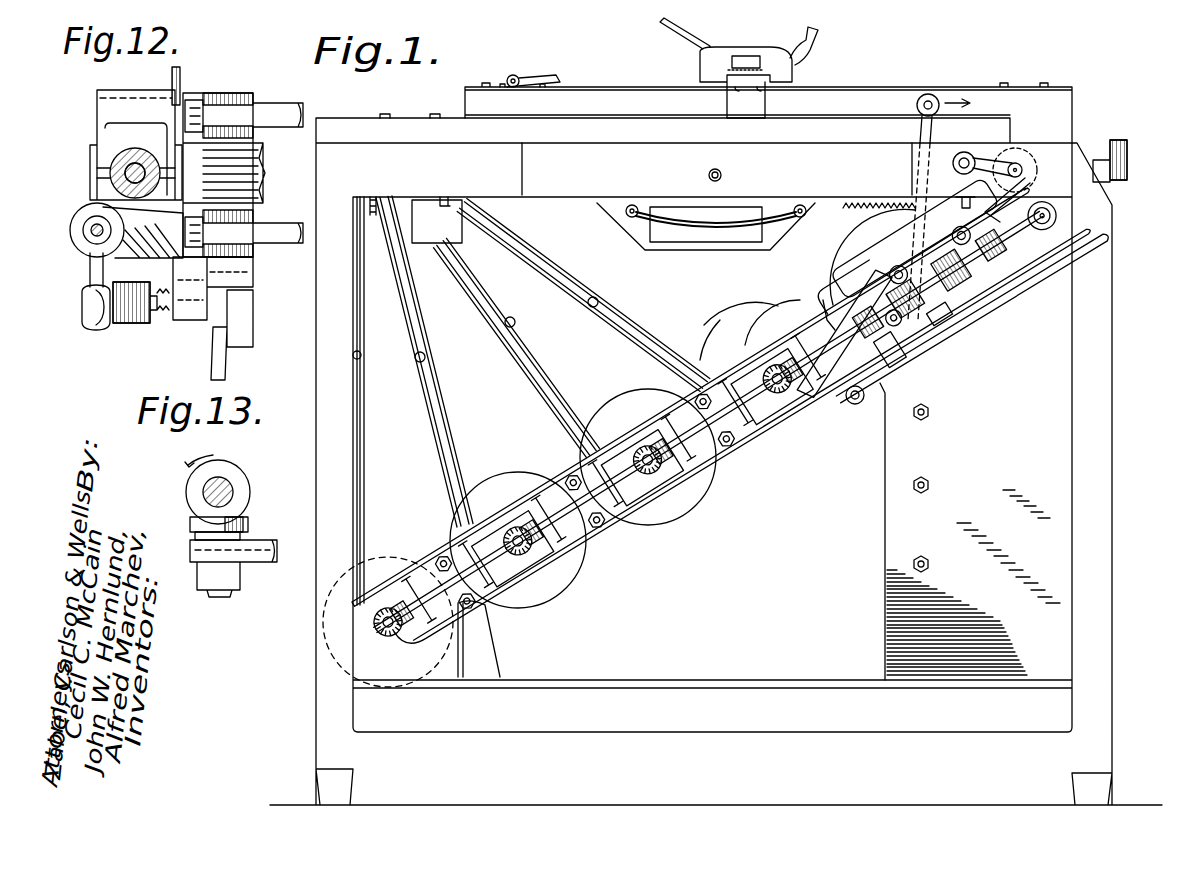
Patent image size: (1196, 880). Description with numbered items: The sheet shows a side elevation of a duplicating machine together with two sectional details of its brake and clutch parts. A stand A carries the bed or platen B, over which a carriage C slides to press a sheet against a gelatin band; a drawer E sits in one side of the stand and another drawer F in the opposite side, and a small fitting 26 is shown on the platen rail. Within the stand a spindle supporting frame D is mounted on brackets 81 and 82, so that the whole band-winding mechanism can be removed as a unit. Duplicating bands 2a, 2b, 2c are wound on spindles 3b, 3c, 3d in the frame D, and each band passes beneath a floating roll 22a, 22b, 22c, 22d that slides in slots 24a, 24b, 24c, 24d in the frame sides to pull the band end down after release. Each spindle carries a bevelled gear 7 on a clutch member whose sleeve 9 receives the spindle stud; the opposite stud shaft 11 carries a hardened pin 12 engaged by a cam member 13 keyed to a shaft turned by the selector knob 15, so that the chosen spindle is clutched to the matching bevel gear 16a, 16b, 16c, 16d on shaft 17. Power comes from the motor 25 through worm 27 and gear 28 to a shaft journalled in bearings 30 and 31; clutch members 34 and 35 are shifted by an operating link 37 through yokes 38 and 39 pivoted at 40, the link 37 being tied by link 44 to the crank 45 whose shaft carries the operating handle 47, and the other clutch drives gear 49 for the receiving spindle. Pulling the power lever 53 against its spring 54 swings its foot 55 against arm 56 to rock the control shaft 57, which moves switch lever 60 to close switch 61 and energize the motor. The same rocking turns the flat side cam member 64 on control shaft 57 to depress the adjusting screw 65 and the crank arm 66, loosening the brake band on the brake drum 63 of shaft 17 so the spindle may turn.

In FIG. 1, the stand A is at (1100, 440).
In FIG. 1, the bed or platen B is at (598, 85).
In FIG. 1, the carriage C is at (705, 58).
In FIG. 1, the spindle supporting frame D is at (742, 440).
In FIG. 12, the spindle supporting frame D is at (238, 100).
In FIG. 1, the drawer E is at (535, 163).
In FIG. 1, the drawer F is at (733, 236).
In FIG. 1, the gelatin or duplicating band 2a is at (690, 378).
In FIG. 1, the gelatin or duplicating band 2b is at (553, 425).
In FIG. 1, the gelatin or duplicating band 2c is at (440, 447).
In FIG. 1, the spindle 3b is at (614, 405).
In FIG. 1, the spindle 3c is at (500, 483).
In FIG. 1, the spindle 3d is at (385, 560).
In FIG. 1, the bevelled gear 7 is at (519, 528).
In FIG. 1, the sleeve 9 is at (772, 309).
In FIG. 1, the stud shaft 11 is at (918, 362).
In FIG. 1, the hardened pin 12 is at (814, 294).
In FIG. 1, the cam member 13 is at (832, 406).
In FIG. 1, the selector knob 15 is at (1128, 170).
In FIG. 1, the bevel gear 16a is at (734, 360).
In FIG. 1, the bevel gear 16b is at (660, 490).
In FIG. 1, the bevel gear 16c is at (545, 565).
In FIG. 1, the bevel gear 16d is at (396, 640).
In FIG. 1, the shaft 17 is at (600, 512).
In FIG. 12, the shaft 17 is at (125, 160).
In FIG. 1, the floating roll 22a is at (596, 297).
In FIG. 1, the floating roll 22b is at (513, 320).
In FIG. 1, the floating roll 22c is at (426, 360).
In FIG. 1, the floating roll 22d is at (360, 358).
In FIG. 1, the slot 24a is at (640, 330).
In FIG. 1, the slot 24b is at (553, 368).
In FIG. 1, the slot 24c is at (455, 430).
In FIG. 1, the slot 24d is at (362, 498).
In FIG. 1, the motor 25 is at (838, 243).
In FIG. 1, the latch 26 is at (527, 82).
In FIG. 1, the worm 27 is at (885, 265).
In FIG. 1, the gear 28 is at (977, 353).
In FIG. 1, the bearing 30 is at (891, 294).
In FIG. 1, the bearing 31 is at (943, 263).
In FIG. 1, the clutch member 34 is at (985, 300).
In FIG. 1, the clutch member 35 is at (856, 315).
In FIG. 1, the operating link 37 is at (823, 302).
In FIG. 12, the operating link 37 is at (178, 82).
In FIG. 1, the yoke 38 is at (985, 197).
In FIG. 1, the yoke 39 is at (820, 318).
In FIG. 12, the yoke 39 is at (105, 116).
In FIG. 1, the pivot 40 is at (749, 338).
In FIG. 1, the link 44 is at (1030, 185).
In FIG. 1, the crank 45 is at (1035, 158).
In FIG. 1, the operating handle 47 is at (985, 157).
In FIG. 1, the gear 49 is at (1056, 215).
In FIG. 1, the power lever 53 is at (922, 132).
In FIG. 1, the spring 54 is at (858, 205).
In FIG. 1, the foot 55 is at (900, 375).
In FIG. 1, the arm 56 is at (887, 349).
In FIG. 1, the control shaft 57 is at (922, 330).
In FIG. 12, the control shaft 57 is at (100, 230).
In FIG. 13, the control shaft 57 is at (236, 496).
In FIG. 1, the switch lever 60 is at (868, 402).
In FIG. 12, the switch lever 60 is at (95, 330).
In FIG. 12, the switch 61 is at (180, 323).
In FIG. 1, the brake drum 63 is at (705, 337).
In FIG. 1, the flat side cam member 64 is at (802, 405).
In FIG. 13, the flat side cam member 64 is at (242, 478).
In FIG. 13, the adjusting screw 65 is at (248, 522).
In FIG. 13, the crank arm 66 is at (262, 565).
In FIG. 1, the bracket 81 is at (505, 630).
In FIG. 1, the bracket 82 is at (983, 290).